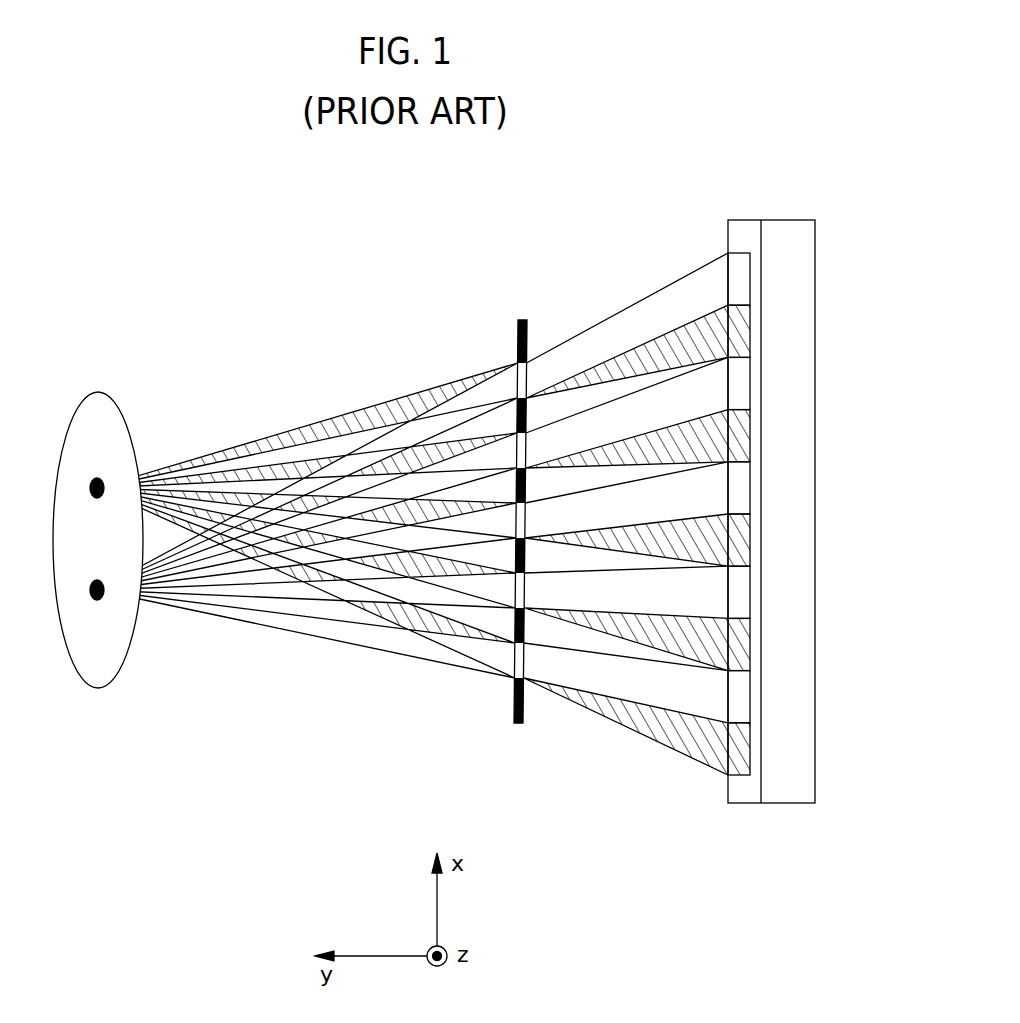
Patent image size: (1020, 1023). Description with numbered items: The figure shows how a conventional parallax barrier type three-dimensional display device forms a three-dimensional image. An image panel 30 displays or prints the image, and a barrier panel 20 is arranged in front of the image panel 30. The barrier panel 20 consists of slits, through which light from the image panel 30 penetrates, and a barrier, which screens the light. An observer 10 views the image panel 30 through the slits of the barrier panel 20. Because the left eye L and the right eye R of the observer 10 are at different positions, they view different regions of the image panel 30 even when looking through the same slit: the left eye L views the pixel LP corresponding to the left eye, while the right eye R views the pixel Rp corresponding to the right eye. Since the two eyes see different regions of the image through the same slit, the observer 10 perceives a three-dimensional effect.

The observer 10 is at (107, 510).
The barrier panel 20 is at (527, 320).
The image panel 30 is at (817, 475).
The left eye L is at (87, 489).
The right eye R is at (87, 591).
The pixel corresponding to the right eye Rp is at (740, 279).
The pixel corresponding to the left eye LP is at (742, 331).